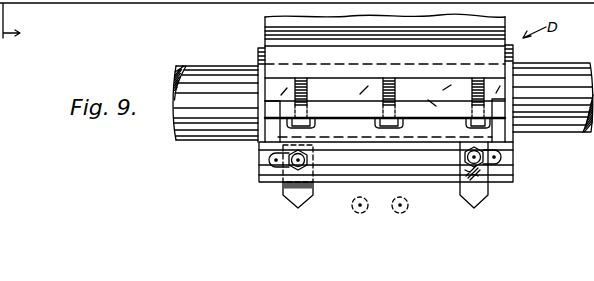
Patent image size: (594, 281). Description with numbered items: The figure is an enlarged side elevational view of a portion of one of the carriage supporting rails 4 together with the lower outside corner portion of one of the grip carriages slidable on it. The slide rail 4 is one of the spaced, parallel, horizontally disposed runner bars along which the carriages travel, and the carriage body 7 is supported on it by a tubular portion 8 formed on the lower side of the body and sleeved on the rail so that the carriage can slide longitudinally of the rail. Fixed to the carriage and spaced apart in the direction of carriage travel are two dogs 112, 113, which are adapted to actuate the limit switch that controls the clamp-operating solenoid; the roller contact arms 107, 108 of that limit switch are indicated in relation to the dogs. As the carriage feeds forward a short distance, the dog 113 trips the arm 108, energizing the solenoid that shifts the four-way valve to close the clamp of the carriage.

The slide rail 4 is at (558, 70).
The body 7 is at (507, 17).
The tubular portion 8 is at (283, 77).
The roller contact arm 107 is at (351, 205).
The roller contact arm 108 is at (409, 205).
The dog 112 is at (283, 192).
The dog 113 is at (488, 190).